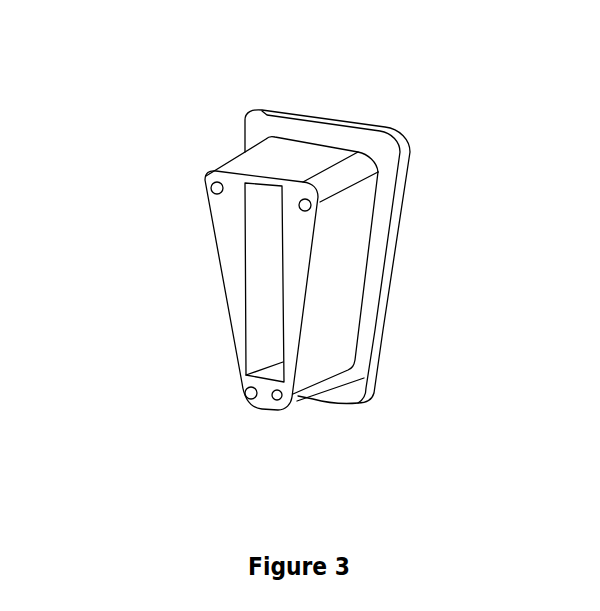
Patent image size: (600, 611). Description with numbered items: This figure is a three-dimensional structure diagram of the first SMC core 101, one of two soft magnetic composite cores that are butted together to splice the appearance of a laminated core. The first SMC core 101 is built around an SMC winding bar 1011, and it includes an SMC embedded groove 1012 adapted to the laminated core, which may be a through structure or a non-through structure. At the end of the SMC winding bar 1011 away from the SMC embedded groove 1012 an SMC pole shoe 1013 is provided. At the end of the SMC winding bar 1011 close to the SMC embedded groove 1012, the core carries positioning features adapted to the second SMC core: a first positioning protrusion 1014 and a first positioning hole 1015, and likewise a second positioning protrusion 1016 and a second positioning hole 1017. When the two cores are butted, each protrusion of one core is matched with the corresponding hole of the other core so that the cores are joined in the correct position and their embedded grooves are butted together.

The first SMC core 101 is at (191, 149).
The SMC winding bar 1011 is at (337, 340).
The SMC embedded groove 1012 is at (267, 340).
The SMC pole shoe 1013 is at (407, 150).
The first positioning protrusion 1014 is at (311, 206).
The first positioning hole 1015 is at (211, 190).
The second positioning protrusion 1016 is at (251, 399).
The second positioning hole 1017 is at (281, 400).